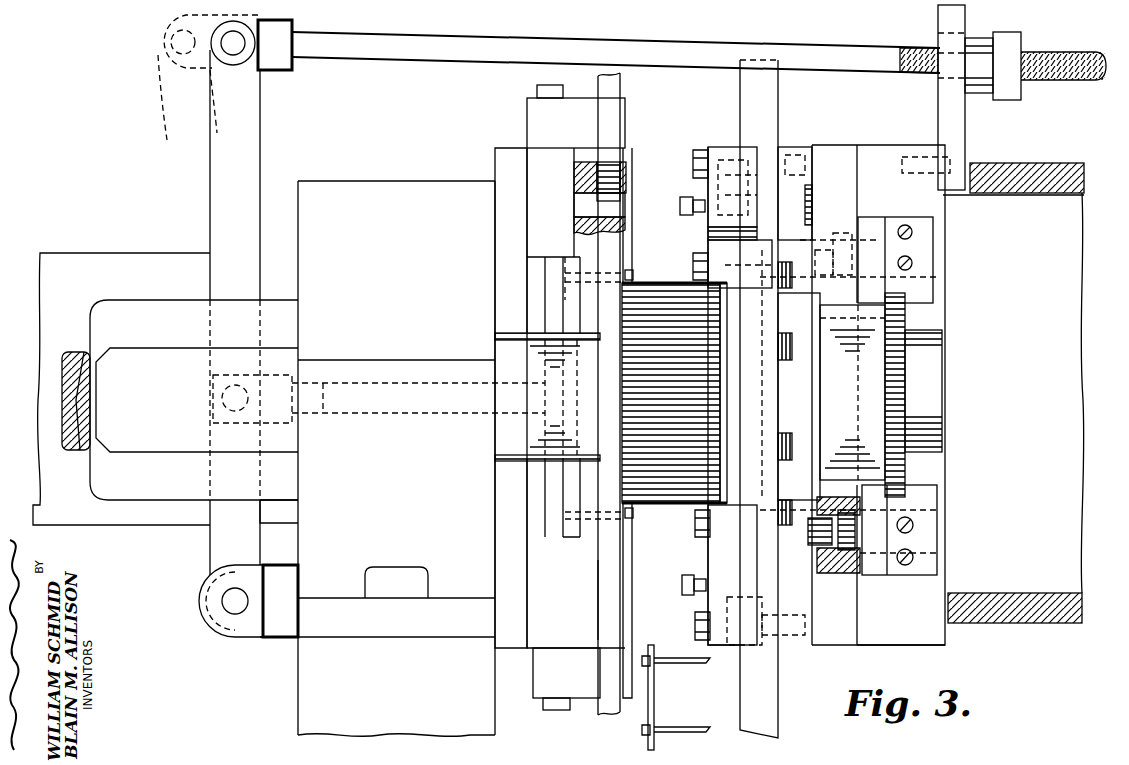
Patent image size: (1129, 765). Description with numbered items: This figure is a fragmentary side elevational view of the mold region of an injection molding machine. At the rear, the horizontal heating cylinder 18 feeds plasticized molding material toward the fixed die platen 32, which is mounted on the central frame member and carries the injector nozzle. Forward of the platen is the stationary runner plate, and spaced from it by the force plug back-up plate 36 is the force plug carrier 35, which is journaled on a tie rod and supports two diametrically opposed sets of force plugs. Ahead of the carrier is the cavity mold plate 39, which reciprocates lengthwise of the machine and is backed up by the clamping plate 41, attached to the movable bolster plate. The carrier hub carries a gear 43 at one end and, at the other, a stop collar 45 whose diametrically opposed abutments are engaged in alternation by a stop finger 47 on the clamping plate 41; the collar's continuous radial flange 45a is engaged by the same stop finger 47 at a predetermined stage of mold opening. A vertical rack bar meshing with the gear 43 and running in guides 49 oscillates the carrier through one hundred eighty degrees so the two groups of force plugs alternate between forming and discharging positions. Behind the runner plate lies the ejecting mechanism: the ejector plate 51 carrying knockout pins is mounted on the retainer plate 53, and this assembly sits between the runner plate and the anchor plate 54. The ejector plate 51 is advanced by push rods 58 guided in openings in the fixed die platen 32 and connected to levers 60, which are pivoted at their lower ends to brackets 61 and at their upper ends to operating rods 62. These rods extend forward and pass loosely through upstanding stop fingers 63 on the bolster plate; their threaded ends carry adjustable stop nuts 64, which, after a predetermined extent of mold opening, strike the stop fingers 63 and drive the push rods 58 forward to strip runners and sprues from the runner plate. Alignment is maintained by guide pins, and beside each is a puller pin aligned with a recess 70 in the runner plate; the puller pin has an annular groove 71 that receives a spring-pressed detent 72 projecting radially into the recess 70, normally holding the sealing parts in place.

The heating cylinder 18 is at (128, 249).
The fixed die platen 32 is at (421, 193).
The force plug carrier 35 is at (770, 713).
The force plug back-up plate 36 is at (724, 647).
The cavity mold plate 39 is at (838, 640).
The clamping plate 41 is at (933, 204).
The gear 43 is at (688, 505).
The stop collar 45 is at (875, 403).
The radial flange 45a is at (895, 471).
The stop finger 47 is at (871, 225).
The guides 49 is at (545, 669).
The ejector plate 51 is at (574, 538).
The retainer plate 53 is at (556, 538).
The anchor plate 54 is at (508, 508).
The push rods 58 is at (414, 390).
The levers 60 is at (212, 216).
The brackets 61 is at (252, 633).
The operating rods 62 is at (600, 45).
The stop fingers 63 is at (960, 17).
The stop nuts 64 is at (1015, 41).
The recess 70 is at (583, 204).
The annular groove 71 is at (693, 218).
The spring-pressed detent 72 is at (605, 197).